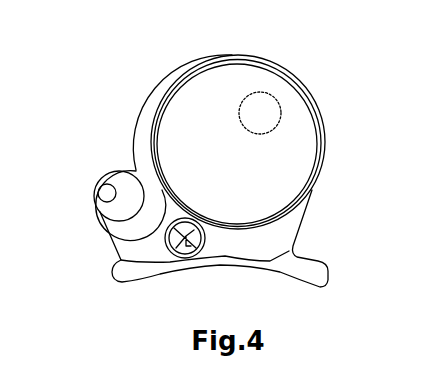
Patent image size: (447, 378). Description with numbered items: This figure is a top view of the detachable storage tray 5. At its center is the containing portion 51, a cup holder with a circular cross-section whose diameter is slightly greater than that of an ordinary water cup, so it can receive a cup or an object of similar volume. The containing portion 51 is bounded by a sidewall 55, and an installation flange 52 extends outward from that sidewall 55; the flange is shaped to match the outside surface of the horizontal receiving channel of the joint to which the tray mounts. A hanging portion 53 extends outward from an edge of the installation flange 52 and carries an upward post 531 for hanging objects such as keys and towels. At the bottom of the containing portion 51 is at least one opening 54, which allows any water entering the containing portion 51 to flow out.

The detachable storage tray 5 is at (206, 145).
The containing portion 51 is at (192, 133).
The installation flange 52 is at (275, 250).
The hanging portion 53 is at (113, 208).
The upward post 531 is at (105, 190).
The opening 54 is at (260, 117).
The sidewall 55 is at (207, 60).